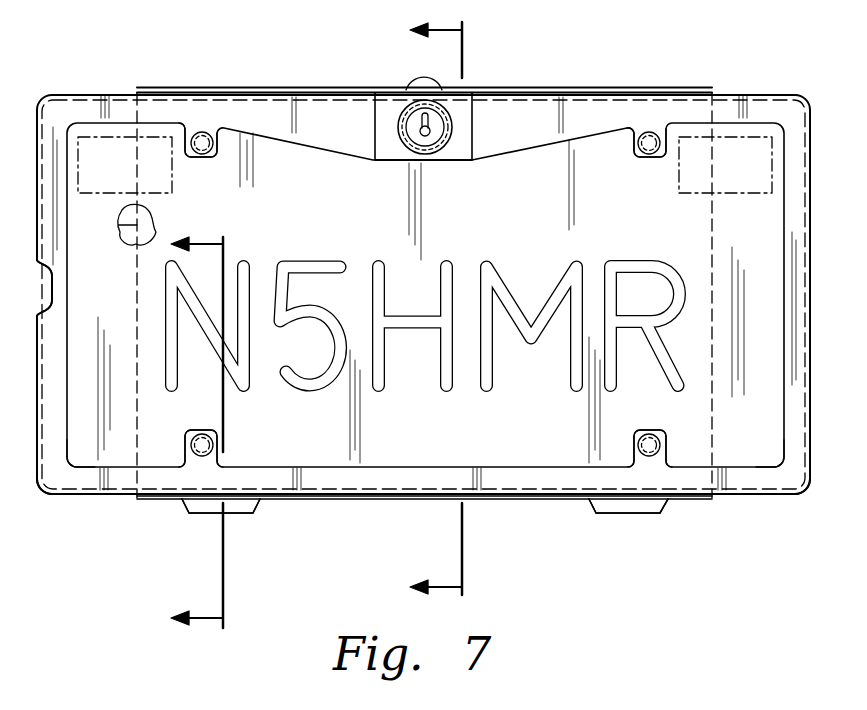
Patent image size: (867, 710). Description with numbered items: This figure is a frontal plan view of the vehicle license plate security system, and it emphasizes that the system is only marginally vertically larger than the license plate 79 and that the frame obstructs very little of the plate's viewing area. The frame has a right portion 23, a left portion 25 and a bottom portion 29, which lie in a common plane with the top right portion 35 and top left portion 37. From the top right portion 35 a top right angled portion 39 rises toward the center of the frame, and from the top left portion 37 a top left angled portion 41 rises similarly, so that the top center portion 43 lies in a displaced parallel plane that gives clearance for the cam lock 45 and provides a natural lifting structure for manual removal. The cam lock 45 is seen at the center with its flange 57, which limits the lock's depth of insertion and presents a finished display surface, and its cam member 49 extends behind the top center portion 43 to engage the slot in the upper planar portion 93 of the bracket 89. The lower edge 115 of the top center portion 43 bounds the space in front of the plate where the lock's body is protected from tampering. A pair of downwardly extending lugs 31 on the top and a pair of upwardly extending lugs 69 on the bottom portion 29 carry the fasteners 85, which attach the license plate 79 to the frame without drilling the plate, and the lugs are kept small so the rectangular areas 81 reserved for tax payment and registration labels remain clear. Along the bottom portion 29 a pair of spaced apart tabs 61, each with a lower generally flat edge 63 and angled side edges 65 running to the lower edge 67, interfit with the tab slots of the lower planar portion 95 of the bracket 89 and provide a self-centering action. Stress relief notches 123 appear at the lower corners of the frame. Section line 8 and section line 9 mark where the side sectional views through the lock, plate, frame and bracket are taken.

The section line 8— 8 is at (426, 312).
The section line 9— 9 is at (189, 433).
The right portion 23 is at (800, 168).
The left portion 25 is at (46, 438).
The bottom portion 29 is at (417, 480).
The downwardly extending lugs 31 is at (200, 160).
The top right portion 35 is at (724, 105).
The top left portion 37 is at (120, 106).
The top right angled portion 39 is at (538, 110).
The top left angled portion 41 is at (313, 115).
The top center portion 43 is at (465, 116).
The cam lock 45 is at (430, 138).
The cam member 49 is at (410, 83).
The flange 57 is at (400, 134).
The tabs 61 is at (250, 515).
The lower generally flat edge 63 is at (202, 515).
The angled side edges 65 is at (182, 505).
The lower edge 67 is at (70, 497).
The upwardly extending lugs 69 is at (188, 430).
The license plate 79 is at (48, 285).
The rectangular areas 81 is at (96, 150).
The fasteners 85 is at (640, 143).
The bracket 89 is at (712, 243).
The upper planar portion 93 is at (655, 88).
The lower planar portion 95 is at (359, 500).
The lower edge 115 is at (463, 164).
The stress relief notches 123 is at (68, 466).